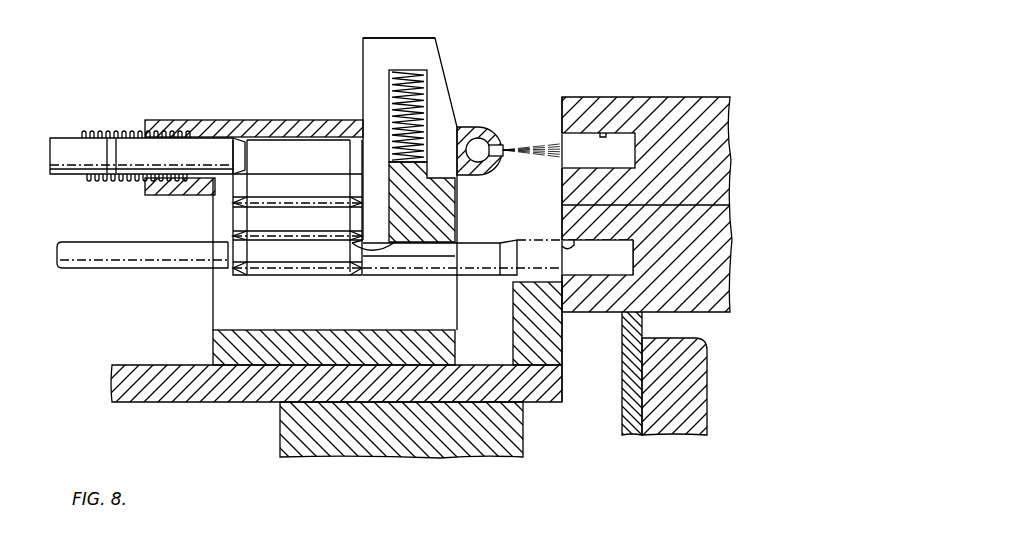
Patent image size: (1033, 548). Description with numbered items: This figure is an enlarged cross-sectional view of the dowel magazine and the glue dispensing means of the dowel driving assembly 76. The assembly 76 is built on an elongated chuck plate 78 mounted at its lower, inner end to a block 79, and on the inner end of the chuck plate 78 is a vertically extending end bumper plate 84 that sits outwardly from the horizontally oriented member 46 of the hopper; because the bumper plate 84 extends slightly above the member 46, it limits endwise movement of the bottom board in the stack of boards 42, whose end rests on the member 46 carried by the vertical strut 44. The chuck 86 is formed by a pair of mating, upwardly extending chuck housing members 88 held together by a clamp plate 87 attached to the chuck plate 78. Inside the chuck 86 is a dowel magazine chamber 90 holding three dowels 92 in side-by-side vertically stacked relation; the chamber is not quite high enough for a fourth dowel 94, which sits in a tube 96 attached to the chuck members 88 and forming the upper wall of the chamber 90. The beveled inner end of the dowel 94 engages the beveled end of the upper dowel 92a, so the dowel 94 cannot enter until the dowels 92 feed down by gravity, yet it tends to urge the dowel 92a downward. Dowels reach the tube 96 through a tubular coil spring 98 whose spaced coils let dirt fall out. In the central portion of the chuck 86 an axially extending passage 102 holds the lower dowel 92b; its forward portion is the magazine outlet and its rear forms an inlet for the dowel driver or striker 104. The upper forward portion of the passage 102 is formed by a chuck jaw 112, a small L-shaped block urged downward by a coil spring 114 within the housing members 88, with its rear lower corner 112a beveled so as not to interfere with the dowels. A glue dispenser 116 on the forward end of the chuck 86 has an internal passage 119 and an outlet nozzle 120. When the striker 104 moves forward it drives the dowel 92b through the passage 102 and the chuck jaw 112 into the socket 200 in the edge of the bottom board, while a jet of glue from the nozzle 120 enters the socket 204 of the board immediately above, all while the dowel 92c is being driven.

The stack of boards 42 is at (676, 86).
The vertical strut 44 is at (701, 381).
The horizontally oriented member 46 is at (641, 328).
The dowel driving assembly 76 is at (313, 72).
The chuck plate 78 is at (226, 400).
The block 79 is at (515, 435).
The end bumper plate 84 is at (557, 343).
The chuck 86 is at (412, 38).
The clamp plate 87 is at (214, 340).
The chuck housing members 88 is at (392, 18).
The dowel magazine chamber 90 is at (302, 147).
The dowels 92 is at (287, 160).
The upper dowel 92a is at (245, 194).
The lower dowel 92b is at (274, 260).
The dowel 92c is at (245, 220).
The fourth dowel 94 is at (204, 143).
The tube 96 is at (268, 100).
The tubular coil spring 98 is at (104, 135).
The axially extending passage 102 is at (368, 274).
The dowel driver or striker 104 is at (116, 246).
The chuck jaw 112 is at (450, 210).
The rear lower corner 112a is at (398, 241).
The coil spring 114 is at (417, 82).
The glue dispenser 116 is at (487, 129).
The internal passage 119 is at (486, 144).
The outlet nozzle 120 is at (497, 147).
The socket 200 is at (571, 246).
The socket 204 is at (604, 136).